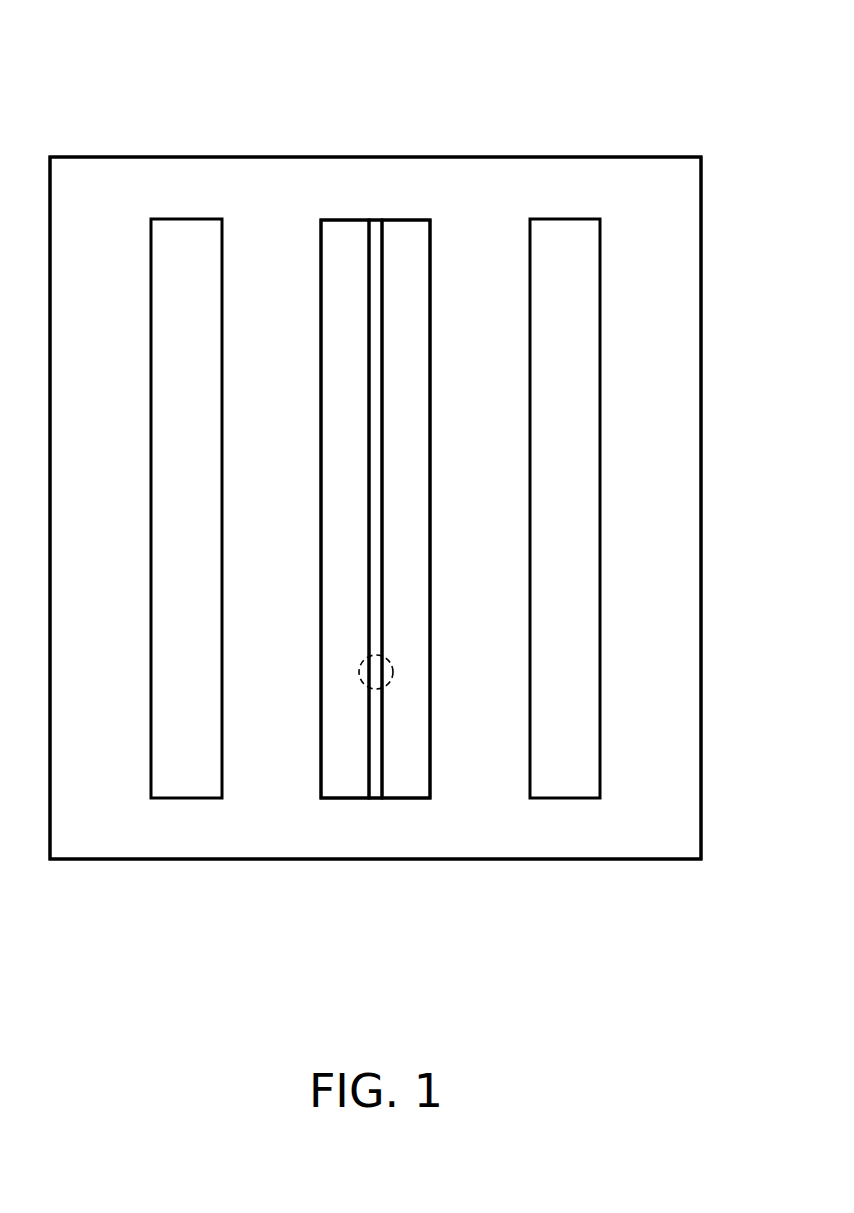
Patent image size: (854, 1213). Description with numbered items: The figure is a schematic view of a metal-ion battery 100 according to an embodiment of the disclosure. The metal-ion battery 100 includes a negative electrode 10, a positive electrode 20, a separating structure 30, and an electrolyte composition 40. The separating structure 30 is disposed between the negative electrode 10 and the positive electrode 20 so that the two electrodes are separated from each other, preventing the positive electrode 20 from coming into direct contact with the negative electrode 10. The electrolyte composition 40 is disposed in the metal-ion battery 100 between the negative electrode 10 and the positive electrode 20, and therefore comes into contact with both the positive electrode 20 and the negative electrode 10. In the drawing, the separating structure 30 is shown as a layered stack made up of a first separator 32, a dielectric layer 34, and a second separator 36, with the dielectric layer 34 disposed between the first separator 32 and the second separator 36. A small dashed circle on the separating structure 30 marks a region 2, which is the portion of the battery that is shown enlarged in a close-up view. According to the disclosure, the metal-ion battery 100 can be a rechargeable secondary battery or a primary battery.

The metal-ion battery 100 is at (746, 43).
The electrolyte composition 40 is at (670, 210).
The negative electrode 10 is at (186, 798).
The positive electrode 20 is at (565, 798).
The separating structure 30 is at (376, 601).
The first separator 32 is at (345, 798).
The dielectric layer 34 is at (377, 798).
The second separator 36 is at (421, 575).
The region 2 is at (393, 667).